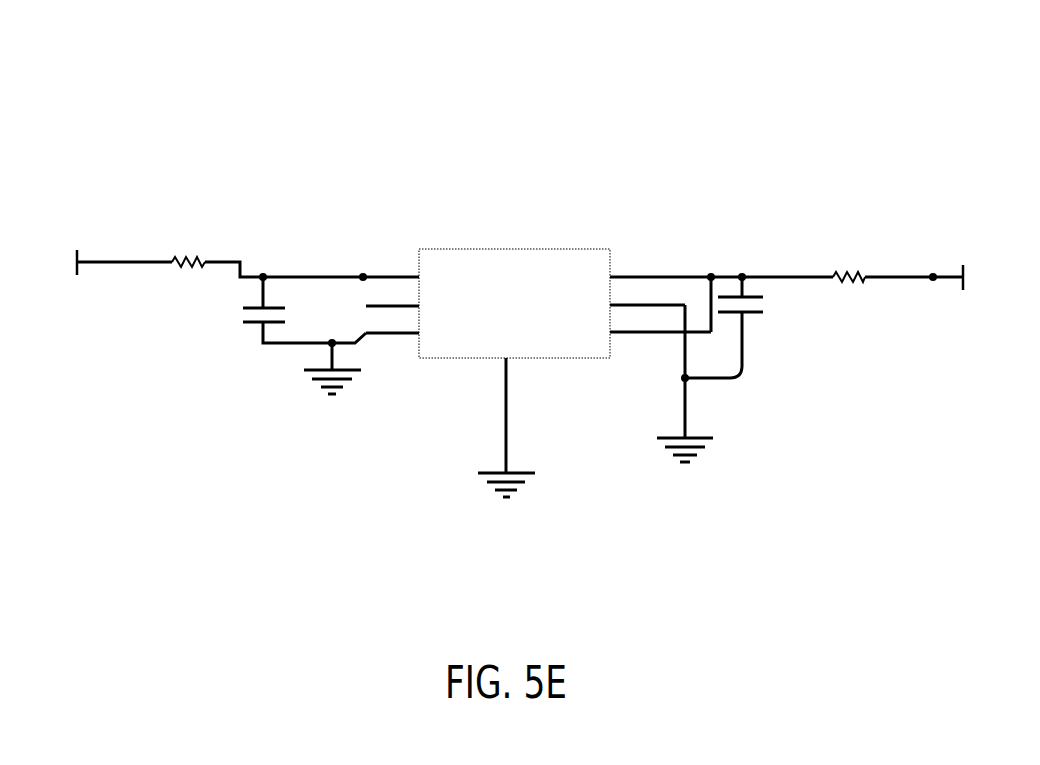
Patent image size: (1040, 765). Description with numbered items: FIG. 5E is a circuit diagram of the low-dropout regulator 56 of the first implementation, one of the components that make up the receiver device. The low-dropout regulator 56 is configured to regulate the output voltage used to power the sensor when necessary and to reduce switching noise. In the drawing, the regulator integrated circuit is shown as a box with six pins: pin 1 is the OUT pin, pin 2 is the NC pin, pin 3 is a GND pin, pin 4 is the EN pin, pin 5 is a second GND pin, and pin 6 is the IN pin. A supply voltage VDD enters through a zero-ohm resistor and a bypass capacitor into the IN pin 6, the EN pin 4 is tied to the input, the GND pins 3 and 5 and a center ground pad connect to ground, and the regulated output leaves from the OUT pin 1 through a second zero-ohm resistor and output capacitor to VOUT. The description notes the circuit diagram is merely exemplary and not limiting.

The low-dropout regulator 56 is at (947, 85).
The regulator OUT pin 1 is at (391, 266).
The regulator NC pin 2 is at (392, 293).
The regulator GND pin 3 is at (392, 320).
The regulator EN pin 4 is at (660, 320).
The regulator GND pin 5 is at (647, 293).
The regulator IN pin 6 is at (660, 266).